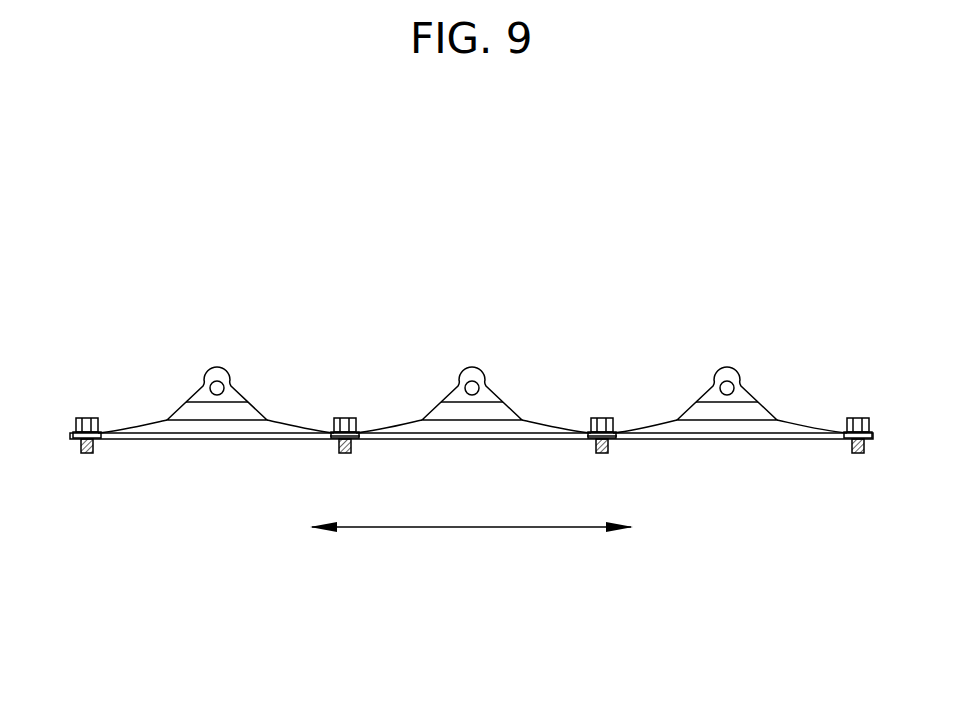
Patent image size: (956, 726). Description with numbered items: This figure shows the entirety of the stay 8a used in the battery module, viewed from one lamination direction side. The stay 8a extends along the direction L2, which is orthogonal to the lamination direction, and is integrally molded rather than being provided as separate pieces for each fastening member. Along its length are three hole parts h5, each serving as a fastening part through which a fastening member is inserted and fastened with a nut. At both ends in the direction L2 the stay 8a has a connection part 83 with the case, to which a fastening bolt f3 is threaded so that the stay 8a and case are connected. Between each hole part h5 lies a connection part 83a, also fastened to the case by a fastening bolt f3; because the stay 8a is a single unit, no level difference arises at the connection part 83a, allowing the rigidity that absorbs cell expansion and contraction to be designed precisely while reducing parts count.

The stay 8a is at (742, 158).
The connection part 83 is at (73, 435).
The connection part 83a is at (331, 436).
The fastening bolt f3 is at (88, 418).
The hole part h5 is at (218, 367).
The direction orthogonal to the lamination direction L2 is at (485, 529).